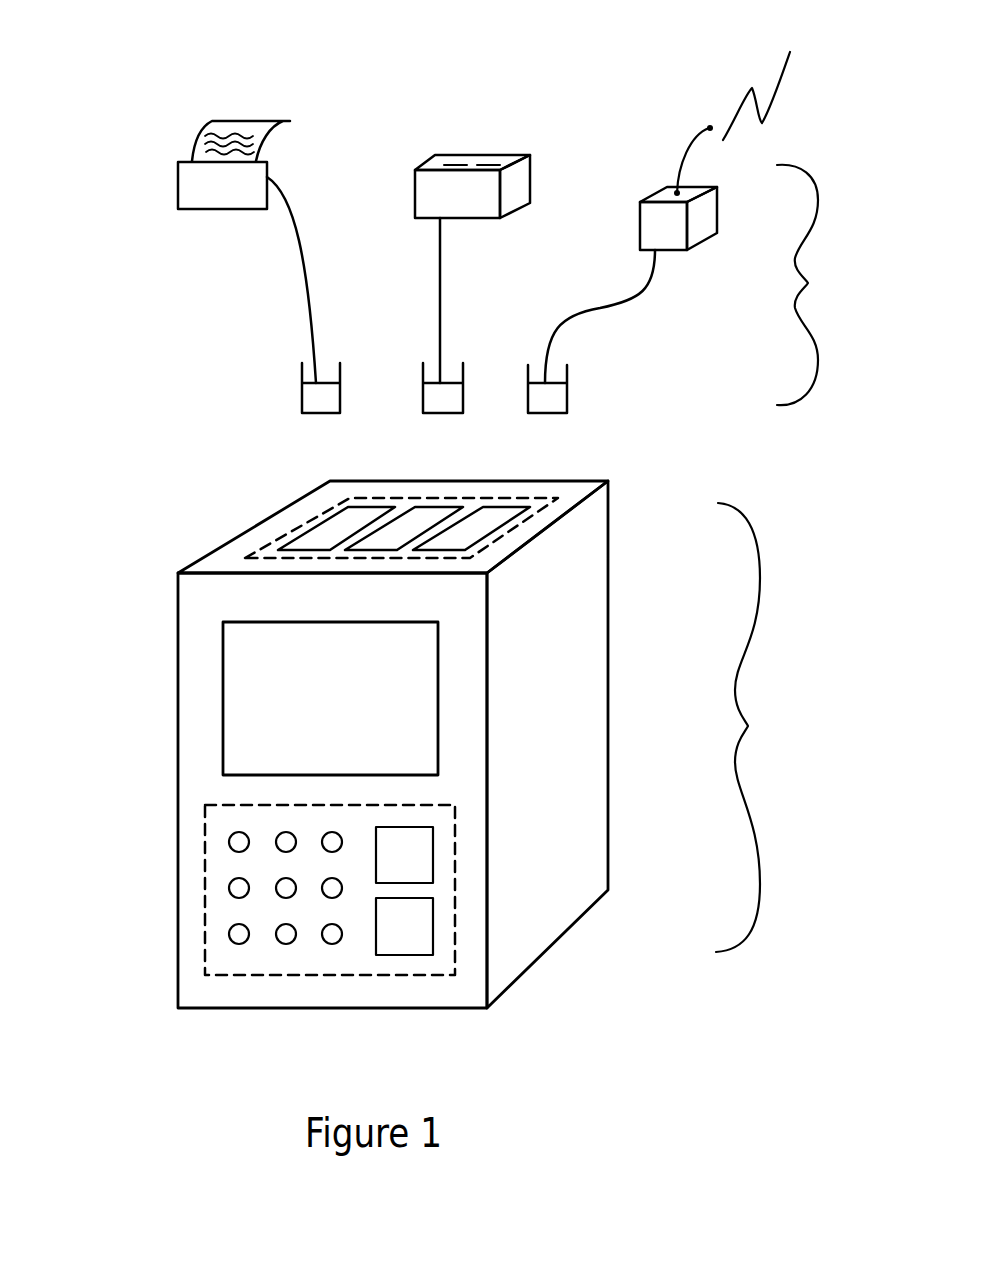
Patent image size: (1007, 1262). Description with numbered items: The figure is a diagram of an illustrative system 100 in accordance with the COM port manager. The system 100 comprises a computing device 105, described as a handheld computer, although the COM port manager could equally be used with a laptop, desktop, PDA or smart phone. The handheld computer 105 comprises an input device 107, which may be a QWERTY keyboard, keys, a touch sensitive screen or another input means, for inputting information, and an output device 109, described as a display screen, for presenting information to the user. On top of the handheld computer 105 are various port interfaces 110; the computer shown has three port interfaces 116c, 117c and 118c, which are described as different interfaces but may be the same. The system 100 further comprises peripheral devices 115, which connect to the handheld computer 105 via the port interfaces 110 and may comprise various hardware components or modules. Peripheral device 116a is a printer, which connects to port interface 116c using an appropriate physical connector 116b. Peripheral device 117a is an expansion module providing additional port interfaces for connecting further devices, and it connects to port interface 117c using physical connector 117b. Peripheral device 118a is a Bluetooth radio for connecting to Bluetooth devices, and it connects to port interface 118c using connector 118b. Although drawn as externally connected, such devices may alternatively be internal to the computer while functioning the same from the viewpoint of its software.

The system 100 is at (669, 84).
The computing device 105 is at (426, 753).
The input device 107 is at (345, 1009).
The output device 109 is at (223, 703).
The port interfaces 110 is at (245, 558).
The peripheral devices 115 is at (511, 231).
The peripheral device 116a is at (223, 120).
The physical connector 116b is at (302, 392).
The port interface 116c is at (322, 522).
The peripheral device 117a is at (467, 155).
The physical connector 117b is at (423, 403).
The port interface 117c is at (435, 507).
The peripheral device 118a is at (668, 187).
The connector 118b is at (567, 403).
The port interface 118c is at (508, 507).